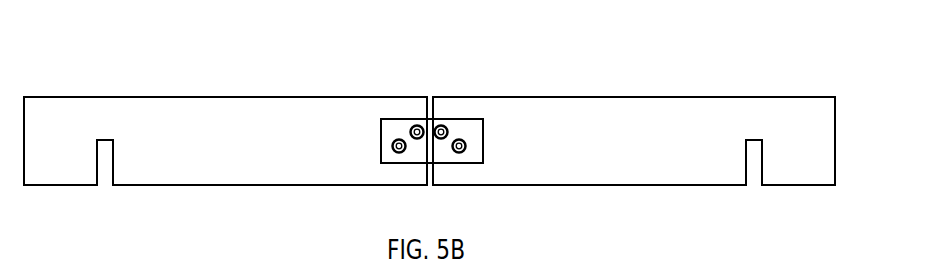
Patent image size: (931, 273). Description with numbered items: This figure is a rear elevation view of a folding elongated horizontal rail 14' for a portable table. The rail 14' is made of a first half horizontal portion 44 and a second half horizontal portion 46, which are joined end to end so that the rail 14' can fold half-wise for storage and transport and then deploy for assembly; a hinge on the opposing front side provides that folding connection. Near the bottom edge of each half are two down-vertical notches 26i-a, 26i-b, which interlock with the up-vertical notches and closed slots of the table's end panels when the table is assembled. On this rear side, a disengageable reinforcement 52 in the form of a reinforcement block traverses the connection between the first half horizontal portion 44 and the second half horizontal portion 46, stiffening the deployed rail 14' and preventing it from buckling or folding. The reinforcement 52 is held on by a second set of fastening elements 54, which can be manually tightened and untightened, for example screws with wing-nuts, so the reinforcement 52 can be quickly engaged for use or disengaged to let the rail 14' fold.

The folding elongated horizontal rail 14' is at (429, 125).
The first half horizontal portion 44 is at (270, 97).
The second half horizontal portion 46 is at (633, 96).
The down-vertical notch 26i-a is at (123, 157).
The down-vertical notch 26i-b is at (737, 155).
The disengageable reinforcement 52 is at (380, 145).
The second set of fastening elements 54 is at (460, 139).